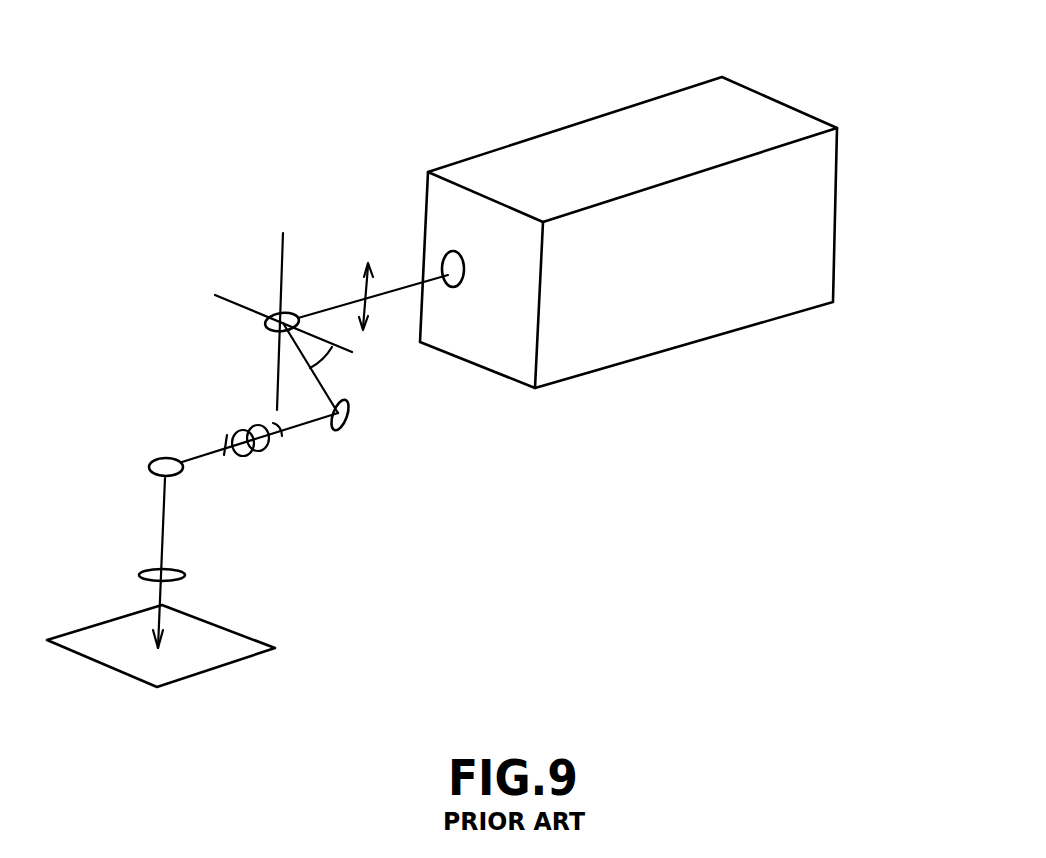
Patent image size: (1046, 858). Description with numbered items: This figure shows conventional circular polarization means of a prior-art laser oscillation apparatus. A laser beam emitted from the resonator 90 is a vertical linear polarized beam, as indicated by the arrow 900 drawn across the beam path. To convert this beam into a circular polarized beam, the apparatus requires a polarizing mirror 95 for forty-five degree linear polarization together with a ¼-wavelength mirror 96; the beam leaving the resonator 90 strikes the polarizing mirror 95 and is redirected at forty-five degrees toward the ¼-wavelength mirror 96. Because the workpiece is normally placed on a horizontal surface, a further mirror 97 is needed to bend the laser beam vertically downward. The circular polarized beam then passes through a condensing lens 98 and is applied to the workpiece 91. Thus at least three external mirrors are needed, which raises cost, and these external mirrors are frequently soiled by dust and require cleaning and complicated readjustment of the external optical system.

The resonator 90 is at (797, 108).
The arrow 900 is at (372, 277).
The polarizing mirror 95 is at (295, 308).
The ¼-wavelength mirror 96 is at (347, 407).
The mirror 97 is at (150, 473).
The condensing lens 98 is at (168, 567).
The workpiece 91 is at (247, 630).